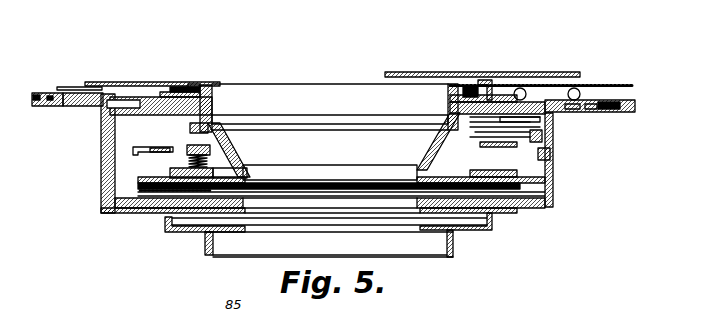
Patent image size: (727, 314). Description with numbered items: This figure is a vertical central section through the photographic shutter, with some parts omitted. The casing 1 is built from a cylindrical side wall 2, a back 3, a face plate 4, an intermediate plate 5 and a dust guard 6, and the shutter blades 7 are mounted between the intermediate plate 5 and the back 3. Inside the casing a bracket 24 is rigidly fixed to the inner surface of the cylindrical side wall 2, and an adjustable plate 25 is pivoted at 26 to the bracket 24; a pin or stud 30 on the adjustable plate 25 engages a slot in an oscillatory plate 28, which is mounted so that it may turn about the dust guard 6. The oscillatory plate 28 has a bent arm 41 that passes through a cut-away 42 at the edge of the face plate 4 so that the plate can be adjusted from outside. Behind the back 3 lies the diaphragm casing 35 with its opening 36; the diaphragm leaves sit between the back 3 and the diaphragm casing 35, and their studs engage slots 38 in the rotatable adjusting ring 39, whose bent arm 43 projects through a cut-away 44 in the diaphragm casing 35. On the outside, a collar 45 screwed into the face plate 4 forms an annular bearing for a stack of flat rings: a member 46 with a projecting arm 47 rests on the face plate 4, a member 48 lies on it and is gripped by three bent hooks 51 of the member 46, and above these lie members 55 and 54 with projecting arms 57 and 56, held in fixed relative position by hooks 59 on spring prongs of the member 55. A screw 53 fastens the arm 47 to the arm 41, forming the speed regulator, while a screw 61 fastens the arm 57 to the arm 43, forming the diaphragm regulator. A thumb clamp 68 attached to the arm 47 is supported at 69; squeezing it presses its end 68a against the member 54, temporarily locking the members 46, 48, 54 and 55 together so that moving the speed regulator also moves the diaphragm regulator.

The casing 1 is at (553, 189).
The cylindrical side wall 2 is at (101, 168).
The back 3 is at (138, 214).
The face plate 4 is at (123, 96).
The intermediate plate 5 is at (155, 184).
The dust guard 6 is at (212, 148).
The shutter blades 7 is at (300, 185).
The bracket 24 is at (550, 152).
The adjustable plate 25 is at (481, 168).
The pivot 26 is at (549, 134).
The oscillatory plate 28 is at (192, 128).
The pin or stud 30 is at (549, 120).
The diaphragm casing 35 is at (170, 232).
The opening 36 is at (246, 230).
The slots 38 is at (433, 214).
The adjusting ring 39 is at (225, 214).
The arm 41 is at (572, 113).
The cut-away 42 is at (547, 102).
The projecting arm 43 is at (118, 214).
The cut-away 44 is at (168, 192).
The collar 45 is at (213, 100).
The member 46 is at (150, 110).
The projecting arm 47 is at (597, 113).
The member 48 is at (168, 91).
The hooks 51 is at (448, 101).
The screw 53 is at (612, 113).
The member 54 is at (186, 91).
The member 55 is at (200, 90).
The projecting arm 56 is at (60, 87).
The projecting arm 57 is at (80, 93).
The hooks 59 is at (212, 94).
The screw 61 is at (58, 107).
The thumb clamp 68 is at (592, 86).
The end of thumb clamp 68a is at (488, 84).
The support 69 is at (522, 88).